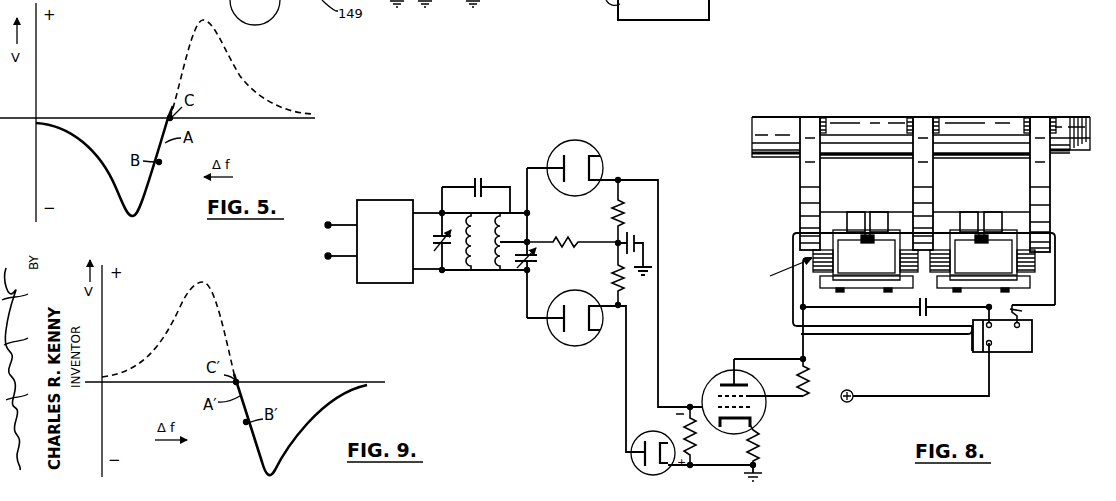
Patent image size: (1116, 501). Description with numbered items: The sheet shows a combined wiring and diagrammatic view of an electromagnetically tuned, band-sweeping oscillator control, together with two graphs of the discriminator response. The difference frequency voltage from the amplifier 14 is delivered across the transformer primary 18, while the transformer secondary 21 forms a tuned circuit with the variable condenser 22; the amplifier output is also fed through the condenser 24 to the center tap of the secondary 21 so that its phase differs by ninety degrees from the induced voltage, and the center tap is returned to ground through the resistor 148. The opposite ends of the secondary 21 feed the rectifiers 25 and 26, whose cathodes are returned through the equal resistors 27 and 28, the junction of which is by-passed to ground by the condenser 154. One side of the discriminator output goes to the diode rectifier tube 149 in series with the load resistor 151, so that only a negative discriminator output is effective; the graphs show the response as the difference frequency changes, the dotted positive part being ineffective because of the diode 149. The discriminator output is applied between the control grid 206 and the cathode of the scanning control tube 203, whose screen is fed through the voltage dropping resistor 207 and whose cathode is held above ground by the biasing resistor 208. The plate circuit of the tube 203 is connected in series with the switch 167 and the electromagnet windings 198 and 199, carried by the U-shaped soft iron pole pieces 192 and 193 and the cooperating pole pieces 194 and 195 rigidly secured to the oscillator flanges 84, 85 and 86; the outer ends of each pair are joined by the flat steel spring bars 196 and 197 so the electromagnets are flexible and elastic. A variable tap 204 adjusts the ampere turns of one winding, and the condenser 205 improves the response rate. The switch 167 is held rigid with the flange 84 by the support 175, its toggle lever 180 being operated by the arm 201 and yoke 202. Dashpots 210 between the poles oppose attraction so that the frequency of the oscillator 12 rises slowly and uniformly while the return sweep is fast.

The oscillator 12 is at (874, 113).
The amplifier 14 is at (410, 199).
The transformer primary 18 is at (470, 272).
The transformer secondary 21 is at (506, 272).
The variable condenser 22 is at (532, 262).
The condenser 24 is at (485, 181).
The rectifier 25 is at (552, 184).
The rectifier 26 is at (582, 291).
The resistor 27 is at (624, 207).
The resistor 28 is at (624, 286).
The flange 84 is at (814, 120).
The flange 85 is at (1042, 120).
The flange 86 is at (928, 120).
The resistor 148 is at (573, 247).
The diode rectifier tube 149 is at (657, 476).
The load resistor 151 is at (696, 449).
The condenser 154 is at (638, 240).
The switch 167 is at (1020, 352).
The support 175 is at (898, 335).
The toggle switch lever 180 is at (1032, 325).
The pole piece 192 is at (856, 213).
The pole piece 193 is at (881, 213).
The pole piece 194 is at (970, 213).
The pole piece 195 is at (996, 213).
The spring bar 196 is at (864, 293).
The spring bar 197 is at (977, 293).
The winding 198 is at (896, 257).
The winding 199 is at (1013, 257).
The arm 201 is at (1057, 286).
The yoke 202 is at (1026, 313).
The scanning control tube 203 is at (756, 397).
The variable tap 204 is at (777, 271).
The condenser 205 is at (918, 306).
The control grid 206 is at (752, 398).
The screen grid voltage dropping resistor 207 is at (812, 380).
The biasing resistor 208 is at (762, 454).
The dashpot 210 is at (867, 232).